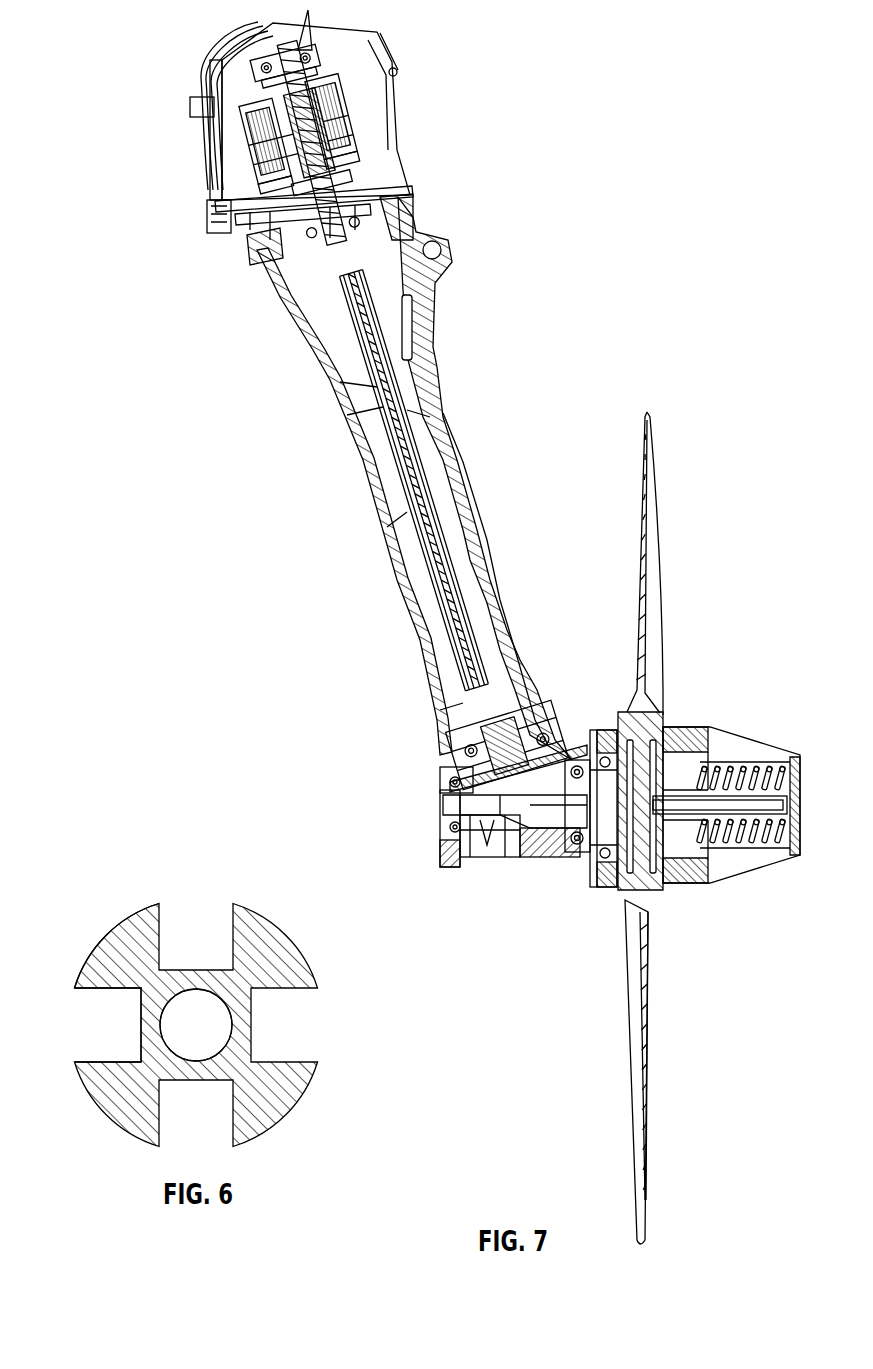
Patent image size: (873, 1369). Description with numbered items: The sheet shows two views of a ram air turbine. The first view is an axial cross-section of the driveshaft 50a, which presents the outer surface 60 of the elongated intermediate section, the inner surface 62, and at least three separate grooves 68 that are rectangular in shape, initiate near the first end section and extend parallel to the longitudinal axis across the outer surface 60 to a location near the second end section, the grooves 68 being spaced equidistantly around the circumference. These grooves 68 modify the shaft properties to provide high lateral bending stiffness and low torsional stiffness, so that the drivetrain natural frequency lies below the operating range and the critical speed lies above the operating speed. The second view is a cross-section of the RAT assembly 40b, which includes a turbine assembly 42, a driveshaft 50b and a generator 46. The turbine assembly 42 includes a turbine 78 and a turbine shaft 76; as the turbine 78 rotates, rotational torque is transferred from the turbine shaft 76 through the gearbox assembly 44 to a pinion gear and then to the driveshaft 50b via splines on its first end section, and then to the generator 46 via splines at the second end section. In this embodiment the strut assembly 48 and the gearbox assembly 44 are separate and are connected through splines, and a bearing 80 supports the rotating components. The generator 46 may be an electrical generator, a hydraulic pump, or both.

In FIG. 7, the ram air turbine assembly 40b is at (170, 44).
In FIG. 7, the turbine assembly 42 is at (724, 681).
In FIG. 7, the gearbox assembly 44 is at (413, 758).
In FIG. 7, the generator 46 is at (408, 113).
In FIG. 7, the strut assembly 48 is at (535, 605).
In FIG. 6, the driveshaft 50a is at (272, 910).
In FIG. 7, the driveshaft 50b is at (410, 518).
In FIG. 6, the outer surface 60 is at (101, 942).
In FIG. 6, the inner surface 62 is at (232, 1036).
In FIG. 6, the grooves 68 is at (95, 1024).
In FIG. 7, the turbine shaft 76 is at (537, 800).
In FIG. 7, the turbine 78 is at (633, 955).
In FIG. 7, the bearing 80 is at (540, 707).